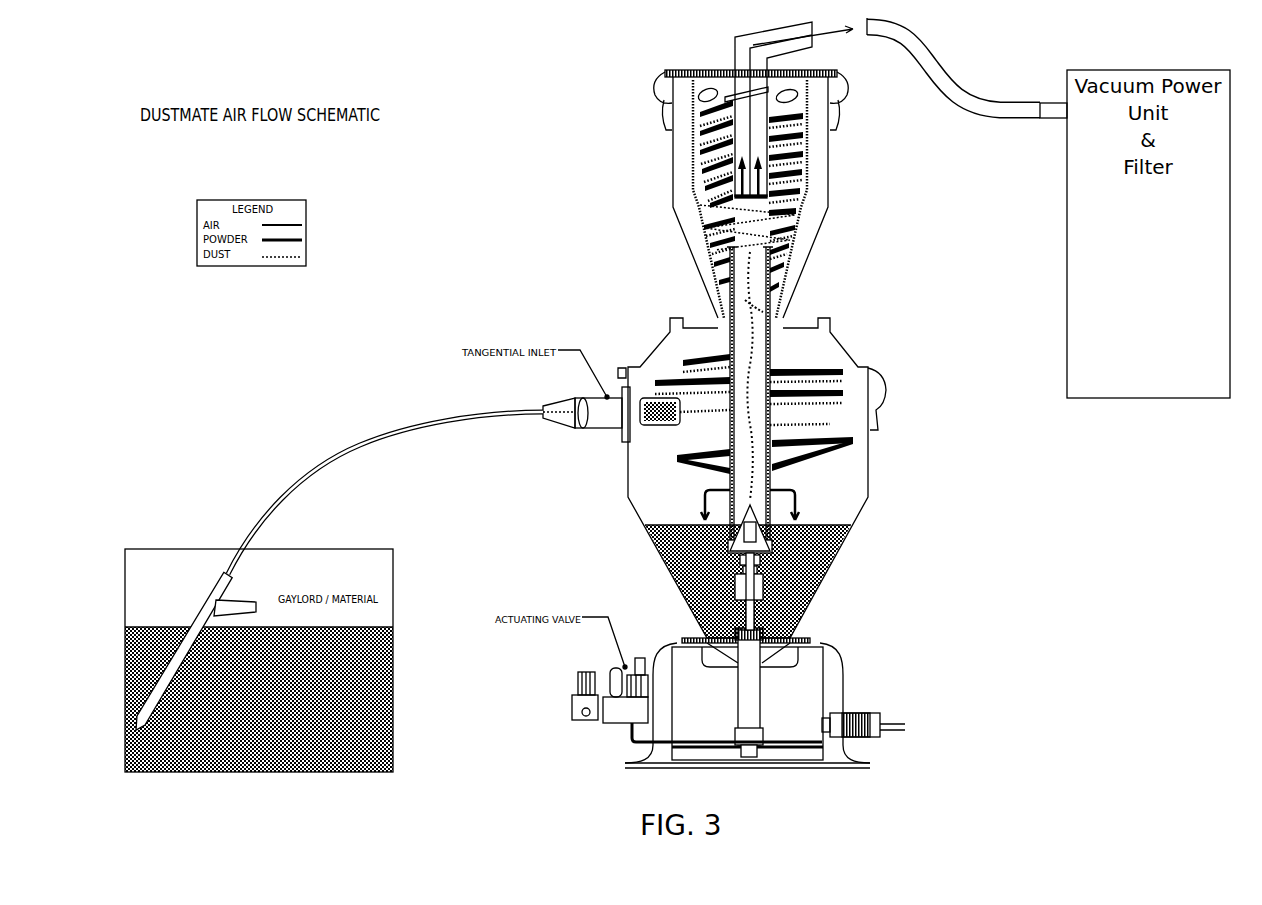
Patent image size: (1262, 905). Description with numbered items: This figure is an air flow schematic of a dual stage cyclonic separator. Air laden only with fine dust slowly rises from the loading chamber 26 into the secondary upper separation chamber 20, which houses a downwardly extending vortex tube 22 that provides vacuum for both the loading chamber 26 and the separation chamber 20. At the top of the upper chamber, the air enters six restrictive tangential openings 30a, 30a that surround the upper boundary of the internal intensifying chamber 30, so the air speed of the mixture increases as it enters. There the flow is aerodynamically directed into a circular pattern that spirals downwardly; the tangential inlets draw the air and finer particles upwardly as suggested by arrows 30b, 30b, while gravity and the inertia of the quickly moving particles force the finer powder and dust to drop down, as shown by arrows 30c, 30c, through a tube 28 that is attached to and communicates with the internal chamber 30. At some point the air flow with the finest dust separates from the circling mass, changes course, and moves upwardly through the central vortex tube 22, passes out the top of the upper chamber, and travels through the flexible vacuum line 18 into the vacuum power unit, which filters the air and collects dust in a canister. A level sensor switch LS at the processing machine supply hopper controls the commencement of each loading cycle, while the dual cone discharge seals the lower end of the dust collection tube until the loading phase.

The vacuum line 18 is at (940, 45).
The secondary upper separation chamber 20 is at (822, 199).
The vortex tube 22 is at (743, 85).
The loading chamber 26 is at (865, 483).
The tube 28 is at (742, 343).
The internal intensifying chamber 30 is at (700, 141).
The tangential openings 30a is at (712, 88).
The arrows 30b is at (740, 176).
The arrows 30c is at (763, 311).
The level sensor switch LS is at (872, 727).